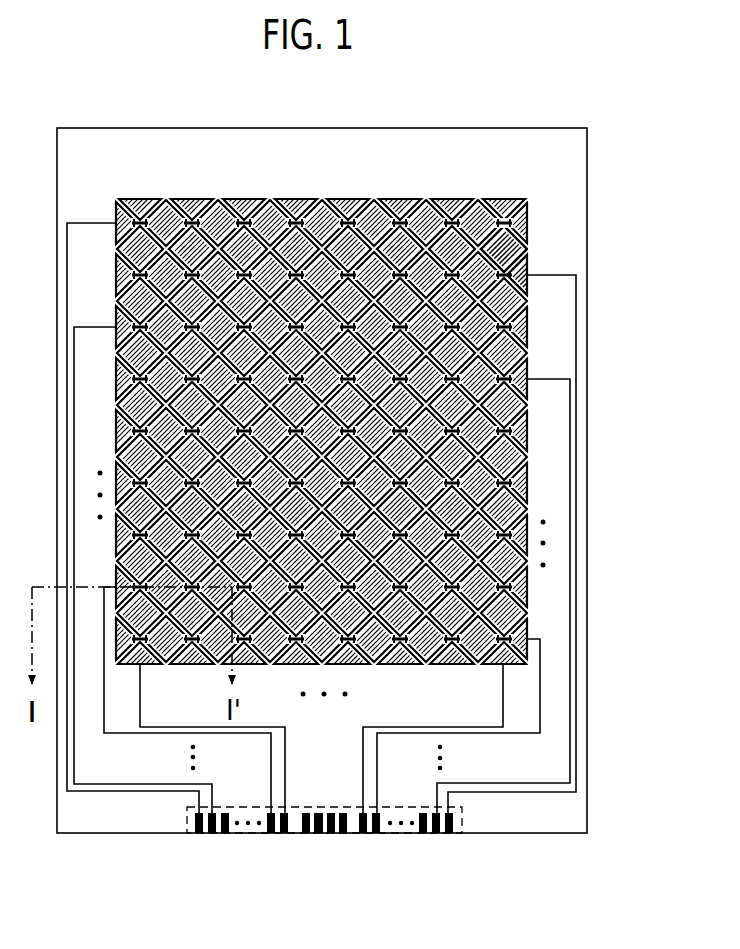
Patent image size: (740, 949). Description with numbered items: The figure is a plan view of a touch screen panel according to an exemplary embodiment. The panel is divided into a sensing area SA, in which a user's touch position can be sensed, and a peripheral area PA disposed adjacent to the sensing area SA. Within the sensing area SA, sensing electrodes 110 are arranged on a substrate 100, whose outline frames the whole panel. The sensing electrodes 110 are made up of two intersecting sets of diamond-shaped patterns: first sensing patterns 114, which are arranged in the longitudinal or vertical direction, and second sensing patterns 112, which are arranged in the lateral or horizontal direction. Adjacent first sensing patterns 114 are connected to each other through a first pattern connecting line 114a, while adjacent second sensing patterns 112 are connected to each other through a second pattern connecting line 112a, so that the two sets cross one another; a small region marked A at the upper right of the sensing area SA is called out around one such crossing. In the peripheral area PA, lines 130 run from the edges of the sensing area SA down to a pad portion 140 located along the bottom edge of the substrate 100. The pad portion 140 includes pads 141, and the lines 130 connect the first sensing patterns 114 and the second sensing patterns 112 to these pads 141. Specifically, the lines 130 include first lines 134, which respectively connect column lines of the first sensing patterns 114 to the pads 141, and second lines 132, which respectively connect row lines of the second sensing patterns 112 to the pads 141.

The substrate 100 is at (588, 161).
The sensing electrodes 110 is at (388, 431).
The second sensing patterns 112 is at (475, 375).
The first sensing patterns 114 is at (460, 398).
The second pattern connecting line 112a is at (530, 290).
The first pattern connecting line 114a is at (530, 266).
The lines 130 is at (382, 518).
The second lines 132 is at (542, 680).
The first lines 134 is at (504, 722).
The pad portion 140 is at (324, 873).
The pads 141 is at (422, 835).
The sensing area SA is at (388, 385).
The peripheral area PA is at (382, 518).
The enlarged portion A is at (507, 228).